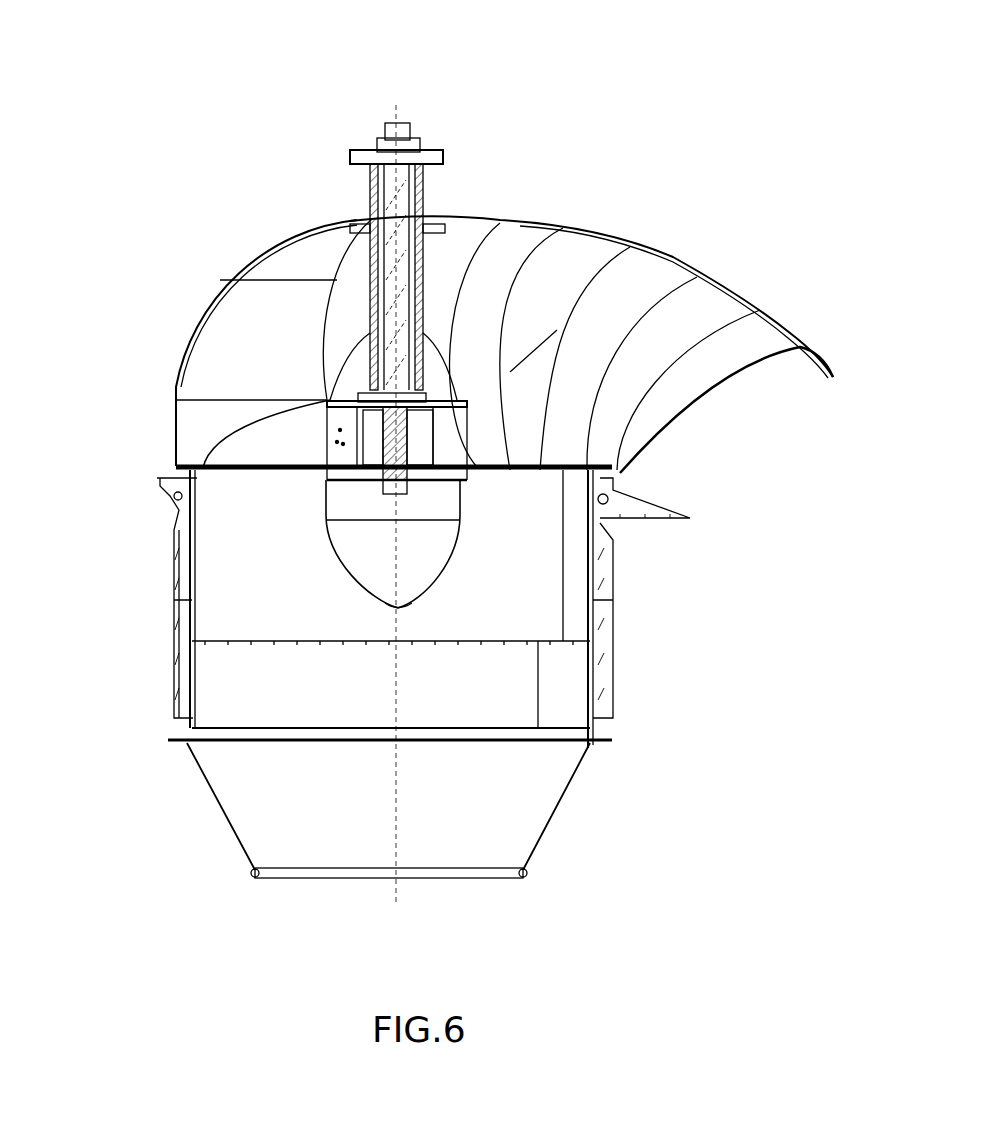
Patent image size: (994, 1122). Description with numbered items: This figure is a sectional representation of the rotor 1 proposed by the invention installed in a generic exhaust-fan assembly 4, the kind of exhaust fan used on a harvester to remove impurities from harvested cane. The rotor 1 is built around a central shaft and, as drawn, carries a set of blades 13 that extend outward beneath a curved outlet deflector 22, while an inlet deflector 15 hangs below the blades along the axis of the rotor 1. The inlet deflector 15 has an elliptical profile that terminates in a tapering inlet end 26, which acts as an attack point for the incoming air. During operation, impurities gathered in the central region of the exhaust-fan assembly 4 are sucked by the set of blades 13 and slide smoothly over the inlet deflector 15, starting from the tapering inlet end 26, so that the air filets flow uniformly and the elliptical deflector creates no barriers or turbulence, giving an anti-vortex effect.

The rotor 1 is at (440, 122).
The exhaust-fan assembly 4 is at (193, 252).
The set of blades 13 is at (287, 437).
The outlet deflector 22 is at (446, 370).
The inlet deflector 15 is at (415, 543).
The tapering inlet end 26 is at (400, 617).